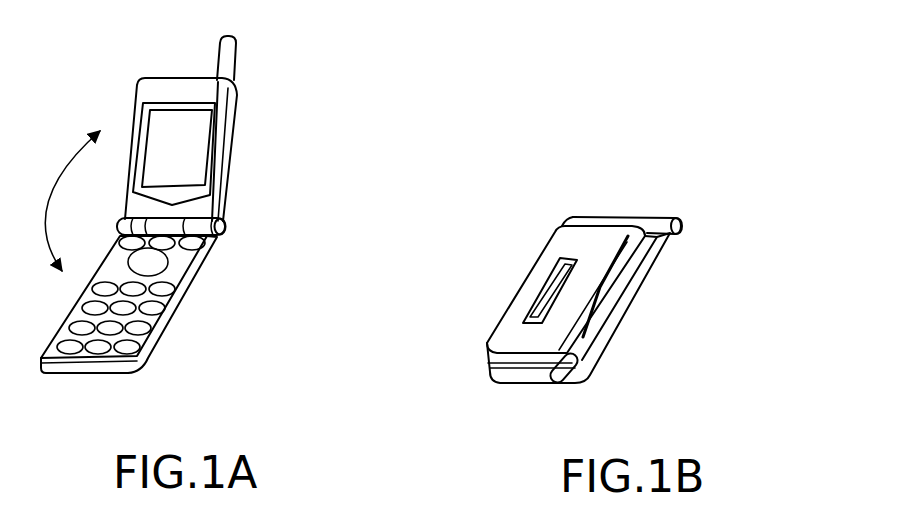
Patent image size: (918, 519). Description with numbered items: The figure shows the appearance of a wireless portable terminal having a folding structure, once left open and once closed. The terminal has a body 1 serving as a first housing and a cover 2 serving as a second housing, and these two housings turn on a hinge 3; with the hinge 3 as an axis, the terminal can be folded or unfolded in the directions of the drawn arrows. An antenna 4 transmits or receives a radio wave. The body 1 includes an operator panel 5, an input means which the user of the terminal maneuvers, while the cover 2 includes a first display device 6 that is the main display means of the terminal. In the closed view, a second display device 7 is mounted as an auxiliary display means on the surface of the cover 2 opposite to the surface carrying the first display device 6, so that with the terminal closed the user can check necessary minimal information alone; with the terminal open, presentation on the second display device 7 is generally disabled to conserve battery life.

In FIG. 1A, the body 1 is at (163, 329).
In FIG. 1B, the body 1 is at (657, 260).
In FIG. 1A, the cover 2 is at (238, 106).
In FIG. 1B, the cover 2 is at (630, 288).
In FIG. 1A, the hinge 3 is at (226, 226).
In FIG. 1B, the hinge 3 is at (682, 226).
In FIG. 1A, the antenna 4 is at (233, 52).
In FIG. 1B, the antenna 4 is at (562, 365).
In FIG. 1A, the operator panel 5 is at (164, 290).
In FIG. 1A, the first display device 6 is at (193, 150).
In FIG. 1B, the second display device 7 is at (543, 305).